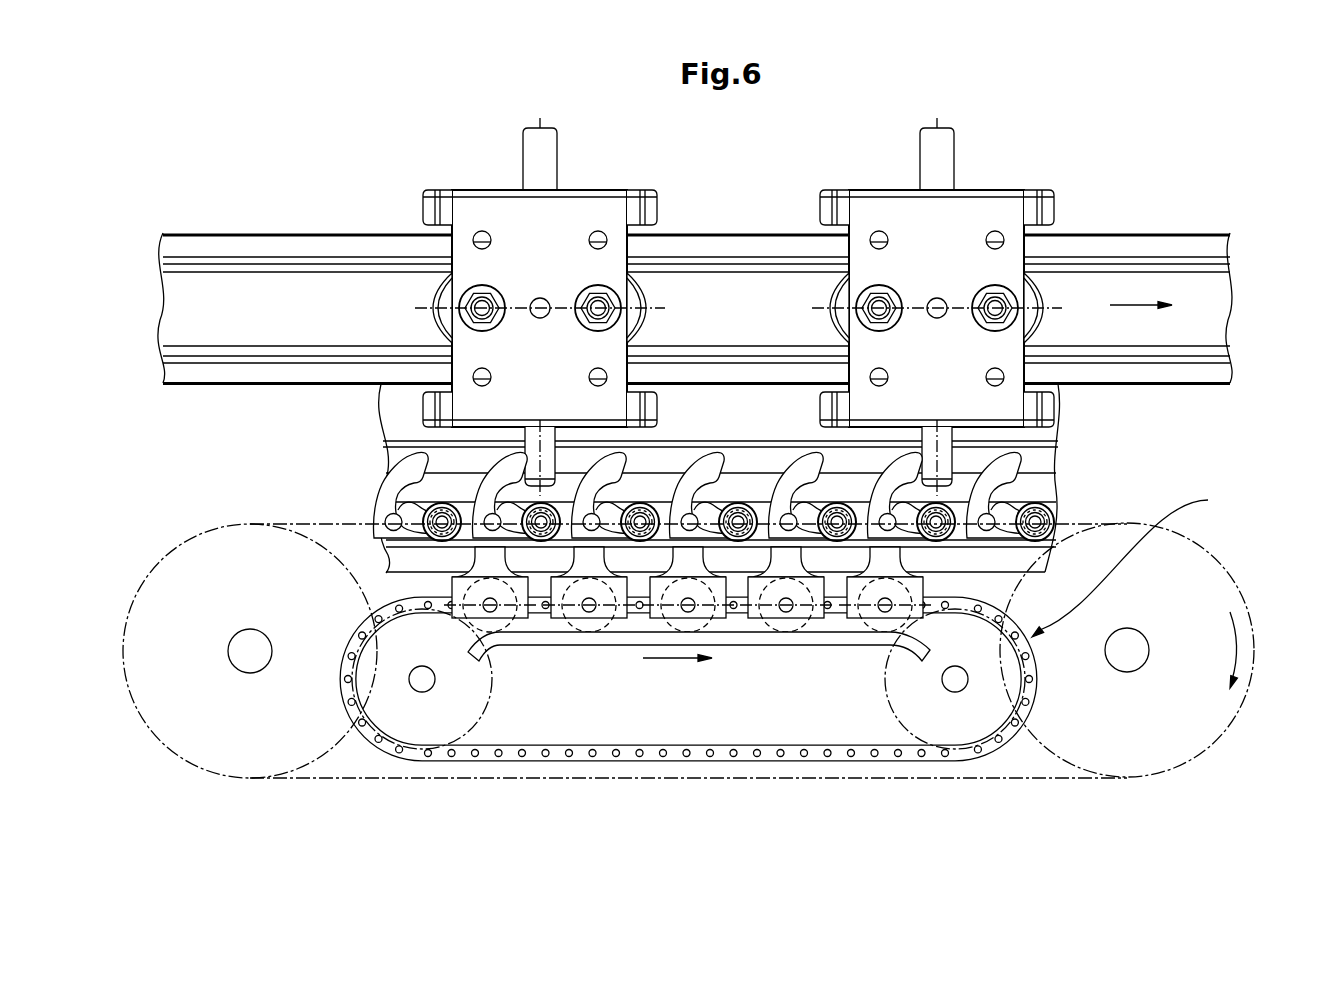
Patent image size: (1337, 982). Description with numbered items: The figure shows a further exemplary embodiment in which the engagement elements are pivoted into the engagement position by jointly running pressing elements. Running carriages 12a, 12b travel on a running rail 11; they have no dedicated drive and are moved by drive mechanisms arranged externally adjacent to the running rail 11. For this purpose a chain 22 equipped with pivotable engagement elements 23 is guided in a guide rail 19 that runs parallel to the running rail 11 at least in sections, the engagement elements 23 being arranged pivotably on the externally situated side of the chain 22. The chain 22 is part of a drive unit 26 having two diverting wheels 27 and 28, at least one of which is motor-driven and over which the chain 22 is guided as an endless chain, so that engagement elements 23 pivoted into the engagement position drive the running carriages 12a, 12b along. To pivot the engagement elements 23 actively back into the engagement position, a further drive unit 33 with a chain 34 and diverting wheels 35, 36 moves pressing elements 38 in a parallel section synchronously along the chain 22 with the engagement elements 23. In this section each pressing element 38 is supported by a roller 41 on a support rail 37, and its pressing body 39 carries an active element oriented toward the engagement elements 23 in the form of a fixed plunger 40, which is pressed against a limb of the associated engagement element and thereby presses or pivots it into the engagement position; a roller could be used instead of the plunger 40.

The running rail 11 is at (1232, 226).
The running carriage 12a is at (472, 150).
The running carriage 12b is at (874, 148).
The guide rail 19 is at (1040, 480).
The chain 22 is at (403, 513).
The engagement element 23 is at (997, 535).
The drive unit 26 is at (1248, 516).
The diverting wheel 27 is at (235, 767).
The diverting wheel 28 is at (1169, 753).
The further drive unit 33 is at (1133, 562).
The chain 34 is at (547, 758).
The diverting wheel 35 is at (417, 728).
The diverting wheel 36 is at (965, 727).
The support rail 37 is at (552, 638).
The pressing element 38 is at (706, 632).
The pressing body 39 is at (487, 567).
The fixed plunger 40 is at (588, 557).
The roller 41 is at (500, 624).